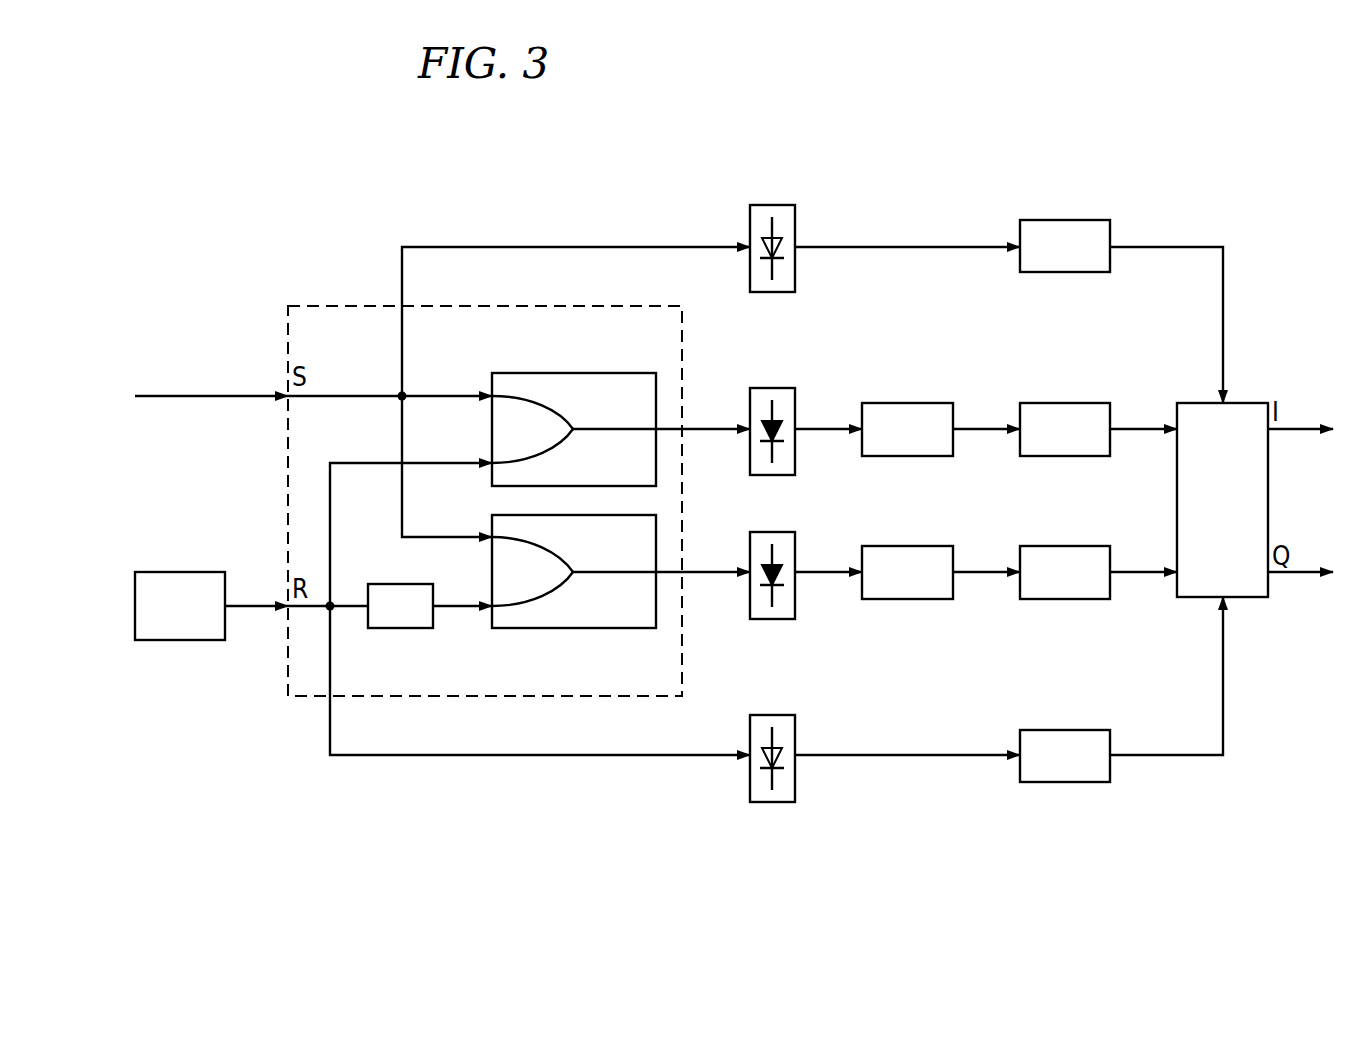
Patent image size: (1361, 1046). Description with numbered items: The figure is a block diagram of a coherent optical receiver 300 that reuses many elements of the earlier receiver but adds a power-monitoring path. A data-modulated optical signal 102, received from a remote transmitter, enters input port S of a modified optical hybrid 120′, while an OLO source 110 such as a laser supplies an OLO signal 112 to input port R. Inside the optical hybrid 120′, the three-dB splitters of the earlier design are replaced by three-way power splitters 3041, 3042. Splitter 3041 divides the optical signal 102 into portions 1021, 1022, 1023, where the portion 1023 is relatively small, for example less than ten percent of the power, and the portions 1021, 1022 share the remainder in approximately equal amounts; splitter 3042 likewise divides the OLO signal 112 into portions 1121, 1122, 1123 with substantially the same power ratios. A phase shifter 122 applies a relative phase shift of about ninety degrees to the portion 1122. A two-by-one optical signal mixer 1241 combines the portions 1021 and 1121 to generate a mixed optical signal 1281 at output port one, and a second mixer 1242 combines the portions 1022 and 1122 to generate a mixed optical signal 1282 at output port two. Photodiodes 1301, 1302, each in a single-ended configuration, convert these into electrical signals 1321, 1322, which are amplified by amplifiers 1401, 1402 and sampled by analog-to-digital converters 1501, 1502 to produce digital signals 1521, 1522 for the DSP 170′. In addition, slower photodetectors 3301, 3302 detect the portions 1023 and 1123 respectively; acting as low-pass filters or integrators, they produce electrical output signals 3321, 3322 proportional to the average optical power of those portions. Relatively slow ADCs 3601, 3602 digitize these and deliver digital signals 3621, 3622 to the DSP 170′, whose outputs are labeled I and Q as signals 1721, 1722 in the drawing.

The coherent optical receiver 300 is at (503, 123).
The data-modulated optical signal 102 is at (207, 394).
The portion of optical signal 1021 is at (440, 394).
The portion of optical signal 1022 is at (440, 536).
The portion of optical signal 1023 is at (545, 246).
The OLO source 110 is at (172, 572).
The OLO signal 112 is at (255, 608).
The portion of OLO signal 1121 is at (440, 462).
The portion of OLO signal 1122 is at (455, 608).
The portion of OLO signal 1123 is at (530, 757).
The optical hybrid 120′ is at (610, 306).
The phase shifter 122 is at (414, 584).
The optical signal mixer 1241 is at (590, 373).
The optical signal mixer 1242 is at (590, 628).
The mixed optical signal 1281 is at (715, 428).
The mixed optical signal 1282 is at (715, 574).
The photodiode 1301 is at (772, 387).
The photodiode 1302 is at (772, 620).
The electrical signal 1321 is at (830, 431).
The electrical signal 1322 is at (830, 574).
The amplifier 1401 is at (896, 403).
The amplifier 1402 is at (904, 599).
The analog-to-digital converter 1501 is at (1054, 403).
The analog-to-digital converter 1502 is at (1062, 599).
The digital signal 1521 is at (1143, 431).
The digital signal 1522 is at (1143, 574).
The DSP 170′ is at (1240, 403).
The in-phase output signal 1721 is at (1302, 431).
The quadrature output signal 1722 is at (1302, 574).
The 3-way power splitter 3041 is at (392, 402).
The 3-way power splitter 3042 is at (334, 600).
The photodetector 3301 is at (772, 204).
The photodetector 3302 is at (772, 803).
The electrical output signal 3321 is at (905, 246).
The electrical output signal 3322 is at (905, 757).
The ADC 3601 is at (1062, 219).
The ADC 3602 is at (1062, 783).
The digital signal 3621 is at (1165, 246).
The digital signal 3622 is at (1165, 757).